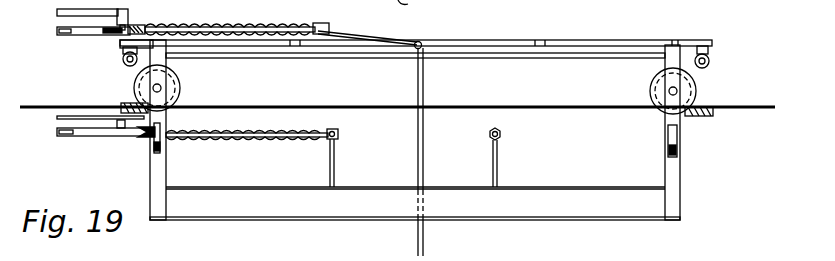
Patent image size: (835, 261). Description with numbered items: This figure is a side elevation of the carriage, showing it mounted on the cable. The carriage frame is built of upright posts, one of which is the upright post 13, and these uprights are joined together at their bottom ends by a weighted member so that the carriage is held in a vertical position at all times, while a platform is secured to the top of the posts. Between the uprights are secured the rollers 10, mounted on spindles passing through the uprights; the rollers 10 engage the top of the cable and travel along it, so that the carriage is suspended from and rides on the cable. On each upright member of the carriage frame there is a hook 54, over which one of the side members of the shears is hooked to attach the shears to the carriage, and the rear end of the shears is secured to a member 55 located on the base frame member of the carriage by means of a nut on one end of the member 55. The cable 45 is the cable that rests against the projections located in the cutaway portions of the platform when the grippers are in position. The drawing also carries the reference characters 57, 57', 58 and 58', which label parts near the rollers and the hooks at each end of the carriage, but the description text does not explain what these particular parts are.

The rollers 10 is at (176, 88).
The upright post 13 is at (158, 187).
The cable 45 is at (417, 80).
The hook 54 is at (154, 150).
The member 55 is at (338, 135).
The roller 57 is at (100, 63).
The roller 57' is at (727, 51).
The guide block 58 is at (105, 96).
The guide block 58' is at (724, 129).